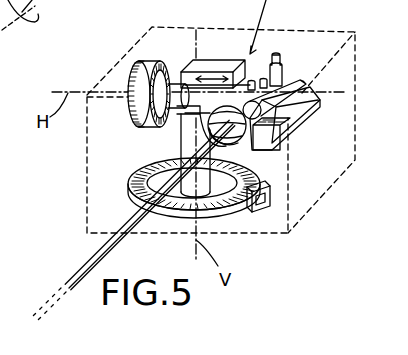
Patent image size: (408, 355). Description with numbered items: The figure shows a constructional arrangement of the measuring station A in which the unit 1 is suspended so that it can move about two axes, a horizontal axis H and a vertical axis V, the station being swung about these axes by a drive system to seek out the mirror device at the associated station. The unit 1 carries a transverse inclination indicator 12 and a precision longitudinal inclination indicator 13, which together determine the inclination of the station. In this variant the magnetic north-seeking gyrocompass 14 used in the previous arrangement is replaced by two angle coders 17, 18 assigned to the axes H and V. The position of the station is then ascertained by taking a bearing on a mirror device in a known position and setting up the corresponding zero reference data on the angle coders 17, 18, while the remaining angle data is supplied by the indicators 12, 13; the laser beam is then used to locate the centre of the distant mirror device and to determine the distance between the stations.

The unit 1 is at (247, 149).
The transverse inclination indicator 12 is at (200, 58).
The longitudinal inclination indicator 13 is at (302, 90).
The gyrocompass 14 is at (30, 17).
The angle coder 17 is at (150, 61).
The angle coder 18 is at (260, 220).